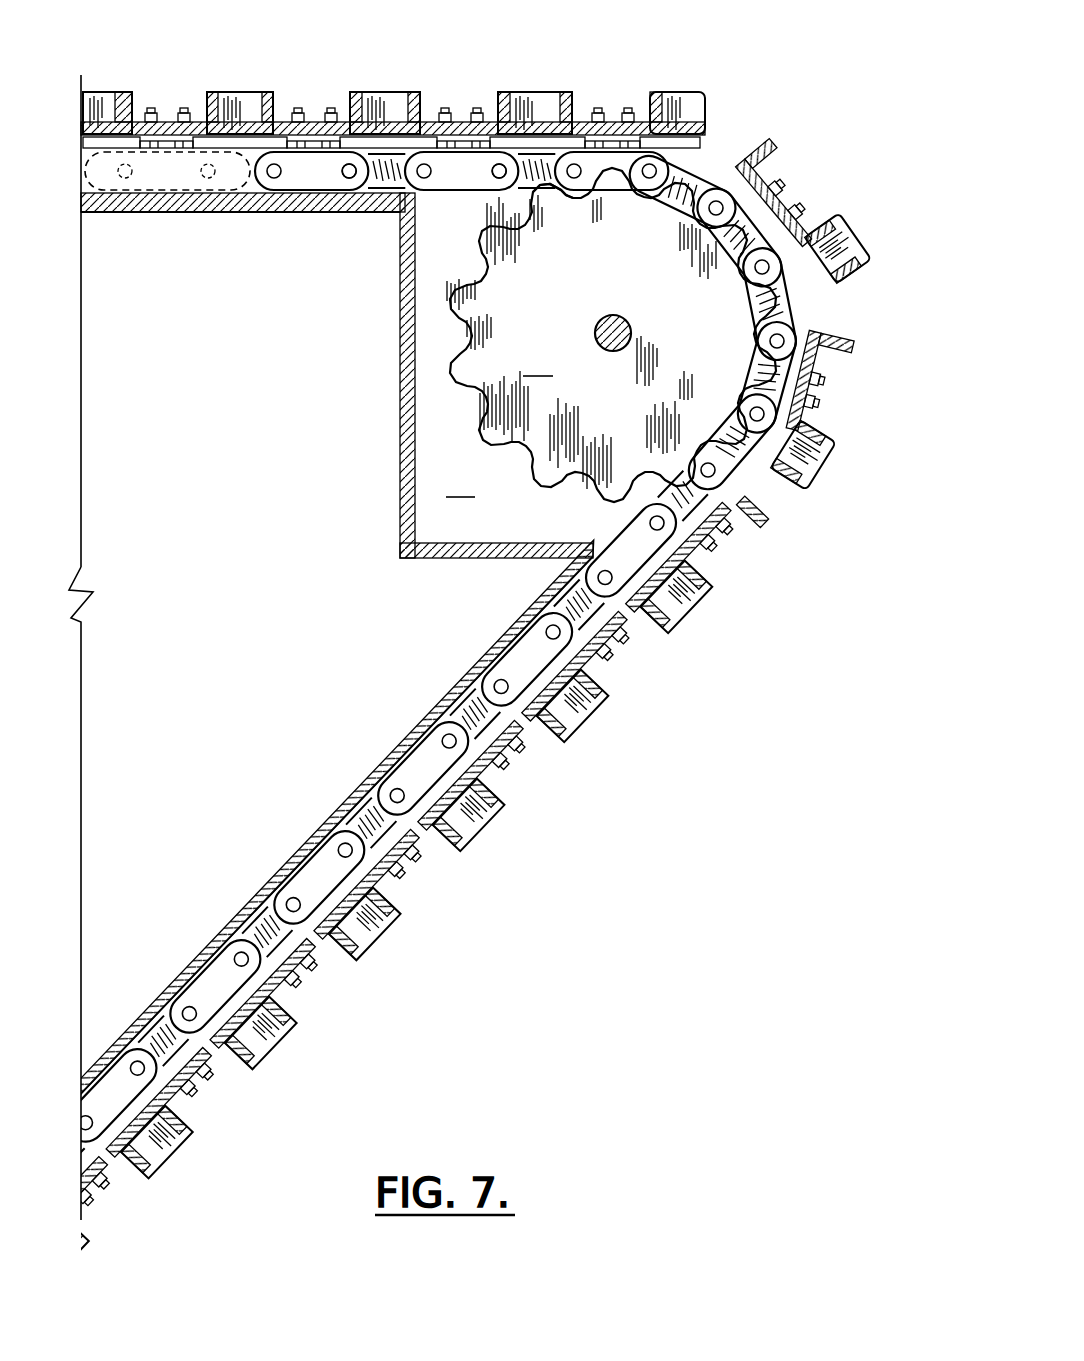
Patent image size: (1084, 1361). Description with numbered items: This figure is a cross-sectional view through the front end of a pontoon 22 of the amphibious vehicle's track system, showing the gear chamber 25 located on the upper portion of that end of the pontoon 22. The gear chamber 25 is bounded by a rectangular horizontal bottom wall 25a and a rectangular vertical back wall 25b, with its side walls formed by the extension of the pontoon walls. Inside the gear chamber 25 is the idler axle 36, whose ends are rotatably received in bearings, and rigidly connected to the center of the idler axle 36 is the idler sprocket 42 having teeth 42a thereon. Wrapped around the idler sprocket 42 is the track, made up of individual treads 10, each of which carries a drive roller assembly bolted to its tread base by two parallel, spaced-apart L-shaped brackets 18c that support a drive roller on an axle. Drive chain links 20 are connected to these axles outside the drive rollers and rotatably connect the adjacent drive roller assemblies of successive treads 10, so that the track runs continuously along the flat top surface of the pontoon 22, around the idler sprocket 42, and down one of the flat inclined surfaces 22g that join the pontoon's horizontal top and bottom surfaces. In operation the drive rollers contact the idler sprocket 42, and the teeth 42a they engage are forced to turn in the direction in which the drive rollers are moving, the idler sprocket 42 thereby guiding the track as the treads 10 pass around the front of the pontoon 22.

The tread 10 is at (304, 93).
The drive chain link 20 is at (388, 201).
The L-shaped bracket 18c is at (597, 187).
The pontoon 22 is at (290, 857).
The flat inclined surface 22g is at (245, 937).
The gear chamber 25 is at (272, 647).
The rectangular horizontal bottom wall 25a is at (452, 561).
The rectangular vertical back wall 25b is at (399, 351).
The idler axle 36 is at (600, 320).
The idler sprocket 42 is at (611, 335).
The tooth of idler sprocket 42a is at (488, 227).